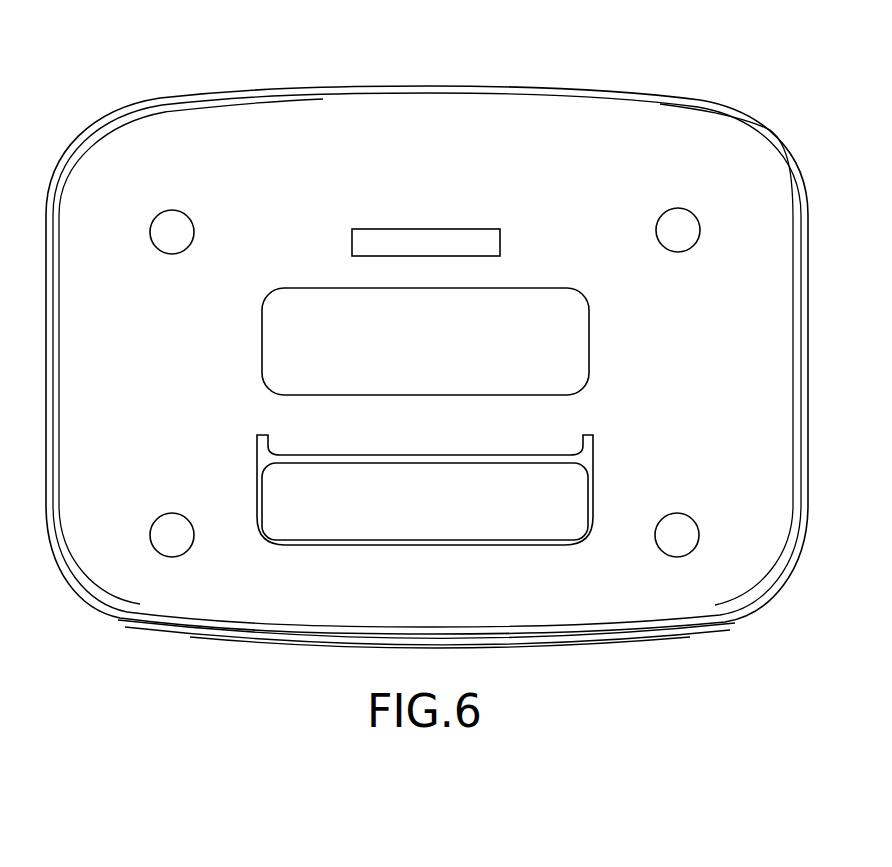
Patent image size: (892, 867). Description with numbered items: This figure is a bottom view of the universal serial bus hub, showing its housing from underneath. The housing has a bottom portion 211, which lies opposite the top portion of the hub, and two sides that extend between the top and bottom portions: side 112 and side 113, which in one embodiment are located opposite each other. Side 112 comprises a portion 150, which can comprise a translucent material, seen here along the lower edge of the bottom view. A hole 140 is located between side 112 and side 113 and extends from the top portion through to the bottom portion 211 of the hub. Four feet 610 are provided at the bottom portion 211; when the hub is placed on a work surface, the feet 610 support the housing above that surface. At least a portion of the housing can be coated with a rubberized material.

The side 113 is at (595, 90).
The bottom portion 211 is at (297, 175).
The side 112 is at (579, 649).
The portion 150 is at (718, 632).
The feet 610 is at (175, 242).
The hole 140 is at (300, 518).